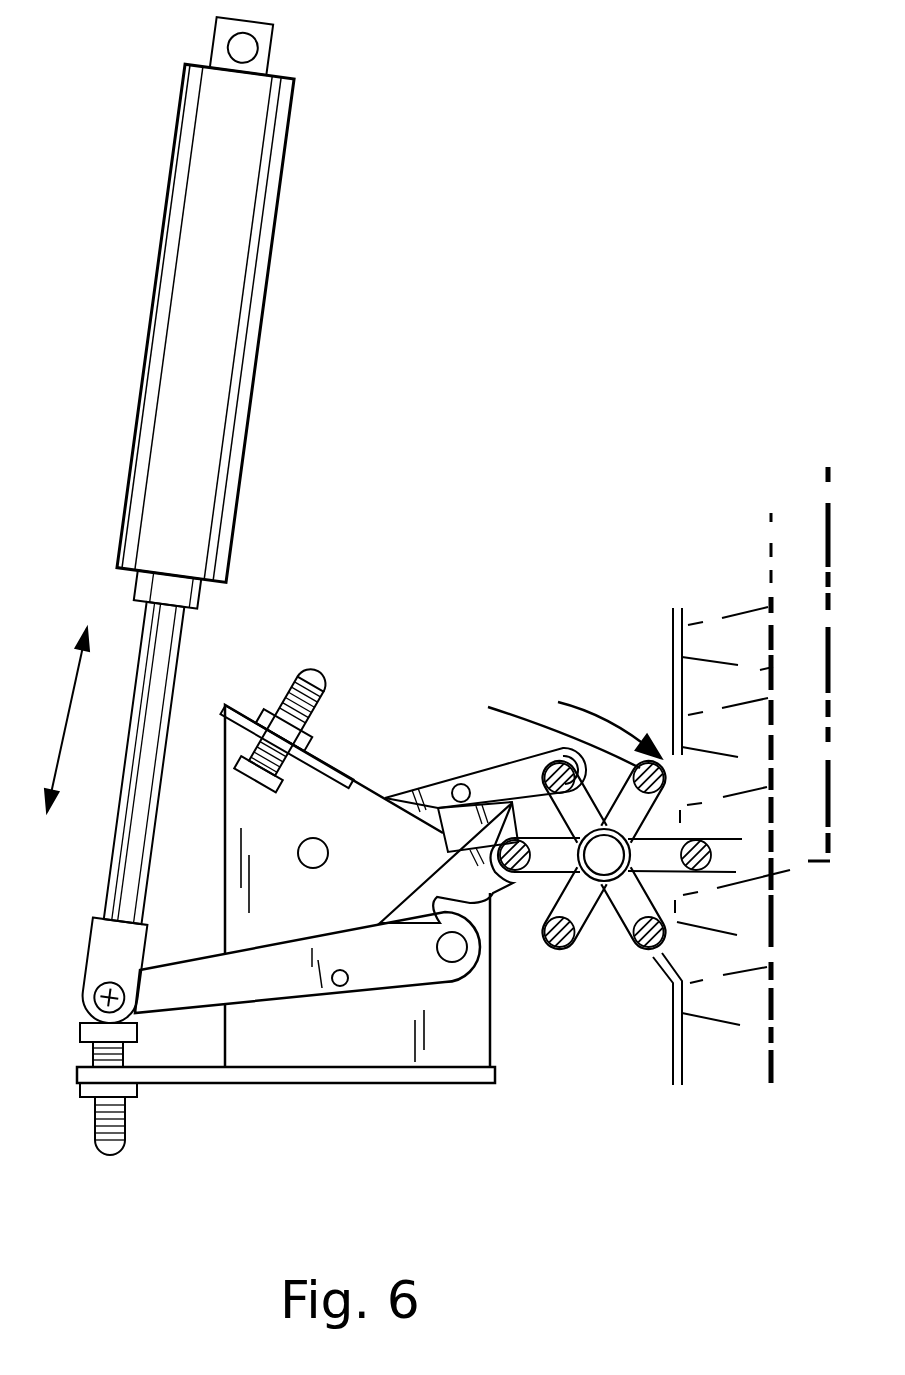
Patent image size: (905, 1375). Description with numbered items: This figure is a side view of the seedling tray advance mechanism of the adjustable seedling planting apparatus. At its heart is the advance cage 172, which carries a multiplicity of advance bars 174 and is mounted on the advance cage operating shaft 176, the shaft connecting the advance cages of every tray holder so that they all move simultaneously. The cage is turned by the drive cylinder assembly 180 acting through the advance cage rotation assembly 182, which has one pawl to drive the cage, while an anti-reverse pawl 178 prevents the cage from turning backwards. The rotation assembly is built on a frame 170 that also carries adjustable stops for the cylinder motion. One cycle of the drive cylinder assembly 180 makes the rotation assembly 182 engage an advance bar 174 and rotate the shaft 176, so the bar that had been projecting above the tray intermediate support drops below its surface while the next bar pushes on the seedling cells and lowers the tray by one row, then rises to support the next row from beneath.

The frame 170 is at (317, 1083).
The advance cage 172 is at (488, 707).
The advance bars 174 is at (548, 752).
The advance cage operating shaft 176 is at (588, 857).
The anti-reverse pawl 178 is at (436, 800).
The drive cylinder assembly 180 is at (227, 260).
The advance cage rotation assembly 182 is at (358, 957).